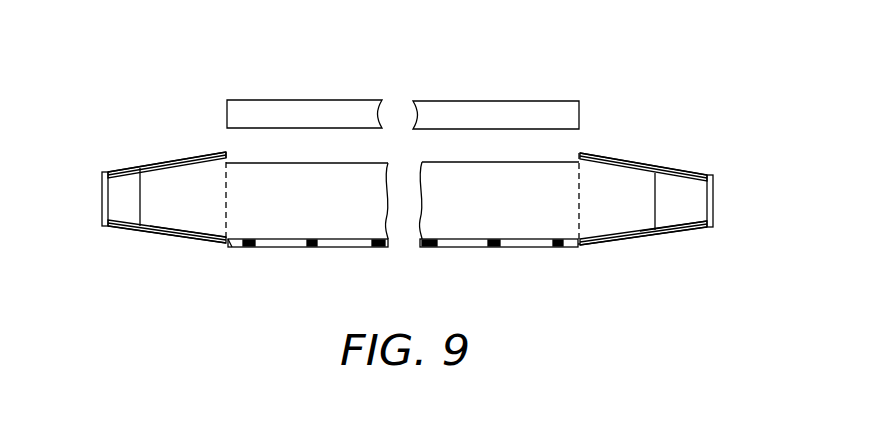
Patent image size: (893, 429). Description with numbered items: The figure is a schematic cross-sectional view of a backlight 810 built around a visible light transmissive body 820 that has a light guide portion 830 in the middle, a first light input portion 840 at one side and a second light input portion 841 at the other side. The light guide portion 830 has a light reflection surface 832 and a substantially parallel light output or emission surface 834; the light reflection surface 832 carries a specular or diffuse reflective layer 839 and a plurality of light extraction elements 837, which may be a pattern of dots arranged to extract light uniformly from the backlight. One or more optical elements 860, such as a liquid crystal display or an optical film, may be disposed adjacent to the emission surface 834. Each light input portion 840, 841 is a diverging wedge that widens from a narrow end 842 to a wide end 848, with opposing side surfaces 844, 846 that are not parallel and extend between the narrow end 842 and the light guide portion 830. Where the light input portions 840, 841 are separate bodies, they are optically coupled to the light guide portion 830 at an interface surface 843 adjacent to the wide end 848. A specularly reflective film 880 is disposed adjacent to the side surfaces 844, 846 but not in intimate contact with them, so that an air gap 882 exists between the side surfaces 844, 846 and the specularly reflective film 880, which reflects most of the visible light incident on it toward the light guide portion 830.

The backlight 810 is at (403, 73).
The visible light transmissive body 820 is at (620, 98).
The light guide portion 830 is at (411, 182).
The light reflection surface 832 is at (525, 239).
The emission surface 834 is at (555, 162).
The light extraction elements 837 is at (495, 248).
The reflective layer 839 is at (328, 248).
The first light input portion 840 is at (160, 113).
The second light input portion 841 is at (660, 154).
The narrow end 842 is at (102, 196).
The interface surface 843 is at (228, 241).
The side surface 844 is at (198, 228).
The side surface 846 is at (136, 174).
The wide end 848 is at (226, 165).
The optical element 860 is at (459, 107).
The specularly reflective film 880 is at (120, 231).
The air gap 882 is at (152, 168).